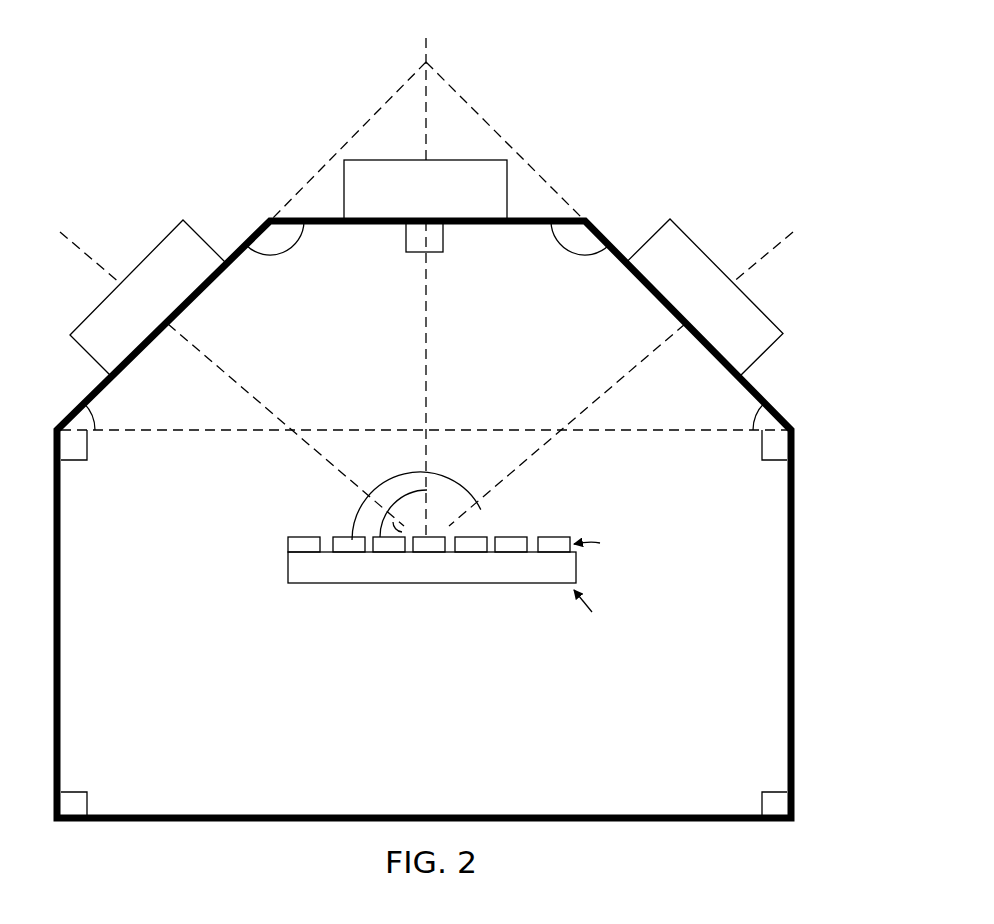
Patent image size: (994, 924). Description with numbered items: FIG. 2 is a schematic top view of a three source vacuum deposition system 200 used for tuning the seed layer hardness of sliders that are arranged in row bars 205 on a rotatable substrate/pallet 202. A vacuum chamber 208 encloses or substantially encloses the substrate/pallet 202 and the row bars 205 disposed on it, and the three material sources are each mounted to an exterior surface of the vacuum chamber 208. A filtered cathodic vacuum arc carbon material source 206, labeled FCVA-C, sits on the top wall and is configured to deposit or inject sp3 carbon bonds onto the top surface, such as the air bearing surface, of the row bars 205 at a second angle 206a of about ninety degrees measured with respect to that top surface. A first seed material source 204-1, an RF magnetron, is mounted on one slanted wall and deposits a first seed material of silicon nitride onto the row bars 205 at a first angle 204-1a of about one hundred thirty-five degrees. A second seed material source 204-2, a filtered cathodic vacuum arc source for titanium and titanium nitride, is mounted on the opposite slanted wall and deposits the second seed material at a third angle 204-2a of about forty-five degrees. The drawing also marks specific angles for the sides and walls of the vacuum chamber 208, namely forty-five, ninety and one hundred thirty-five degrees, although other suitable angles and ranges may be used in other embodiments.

The three source vacuum deposition system 200 is at (598, 76).
The substrate/pallet 202 is at (288, 575).
The first seed material source 204-1 is at (697, 208).
The second seed material source 204-2 is at (172, 227).
The first angle 204-1a is at (468, 472).
The third angle 204-2a is at (383, 530).
The row bars 205 is at (288, 545).
The filtered cathodic vacuum arc carbon material source 206 is at (458, 160).
The second angle 206a is at (405, 492).
The vacuum chamber 208 is at (795, 625).